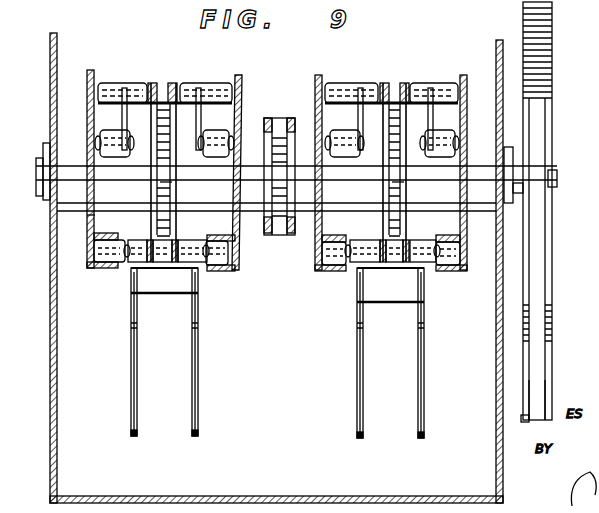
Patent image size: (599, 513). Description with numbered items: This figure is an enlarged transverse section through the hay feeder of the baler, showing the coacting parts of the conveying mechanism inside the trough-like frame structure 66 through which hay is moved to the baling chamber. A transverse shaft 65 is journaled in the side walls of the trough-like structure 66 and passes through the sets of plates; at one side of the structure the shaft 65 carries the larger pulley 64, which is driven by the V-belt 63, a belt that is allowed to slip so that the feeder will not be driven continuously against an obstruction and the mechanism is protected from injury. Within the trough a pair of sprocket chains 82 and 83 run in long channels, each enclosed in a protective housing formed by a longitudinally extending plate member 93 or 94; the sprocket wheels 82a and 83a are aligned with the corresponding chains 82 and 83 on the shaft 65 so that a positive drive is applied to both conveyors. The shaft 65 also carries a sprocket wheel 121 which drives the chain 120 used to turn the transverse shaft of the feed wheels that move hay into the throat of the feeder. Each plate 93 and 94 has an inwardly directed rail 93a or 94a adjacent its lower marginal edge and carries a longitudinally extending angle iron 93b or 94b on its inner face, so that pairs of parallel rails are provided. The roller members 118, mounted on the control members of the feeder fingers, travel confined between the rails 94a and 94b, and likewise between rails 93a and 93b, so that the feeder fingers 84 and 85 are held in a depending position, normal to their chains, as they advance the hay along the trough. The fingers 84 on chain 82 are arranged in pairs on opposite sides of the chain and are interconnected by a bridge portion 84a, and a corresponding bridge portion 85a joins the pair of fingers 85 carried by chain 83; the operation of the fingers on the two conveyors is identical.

The V-belt 63 is at (540, 374).
The larger pulley 64 is at (550, 118).
The shaft 65 is at (68, 163).
The trough-like frame structure 66 is at (57, 392).
The sprocket chain 82 is at (160, 100).
The sprocket wheel 82a is at (170, 183).
The sprocket chain 83 is at (393, 100).
The sprocket wheel 83a is at (400, 183).
The feeder fingers 84 is at (191, 425).
The bridge portion 84a is at (154, 296).
The feeder fingers 85 is at (420, 415).
The cross bar 85a is at (390, 294).
The plate member 93 is at (322, 80).
The inwardly directed rail 93a is at (441, 273).
The angle iron 93b is at (315, 228).
The plate member 94 is at (130, 50).
The inwardly directed rail 94a is at (220, 274).
The angle iron 94b is at (95, 216).
The roller members 118 is at (96, 268).
The chain 120 is at (267, 120).
The sprocket wheel 121 is at (278, 132).